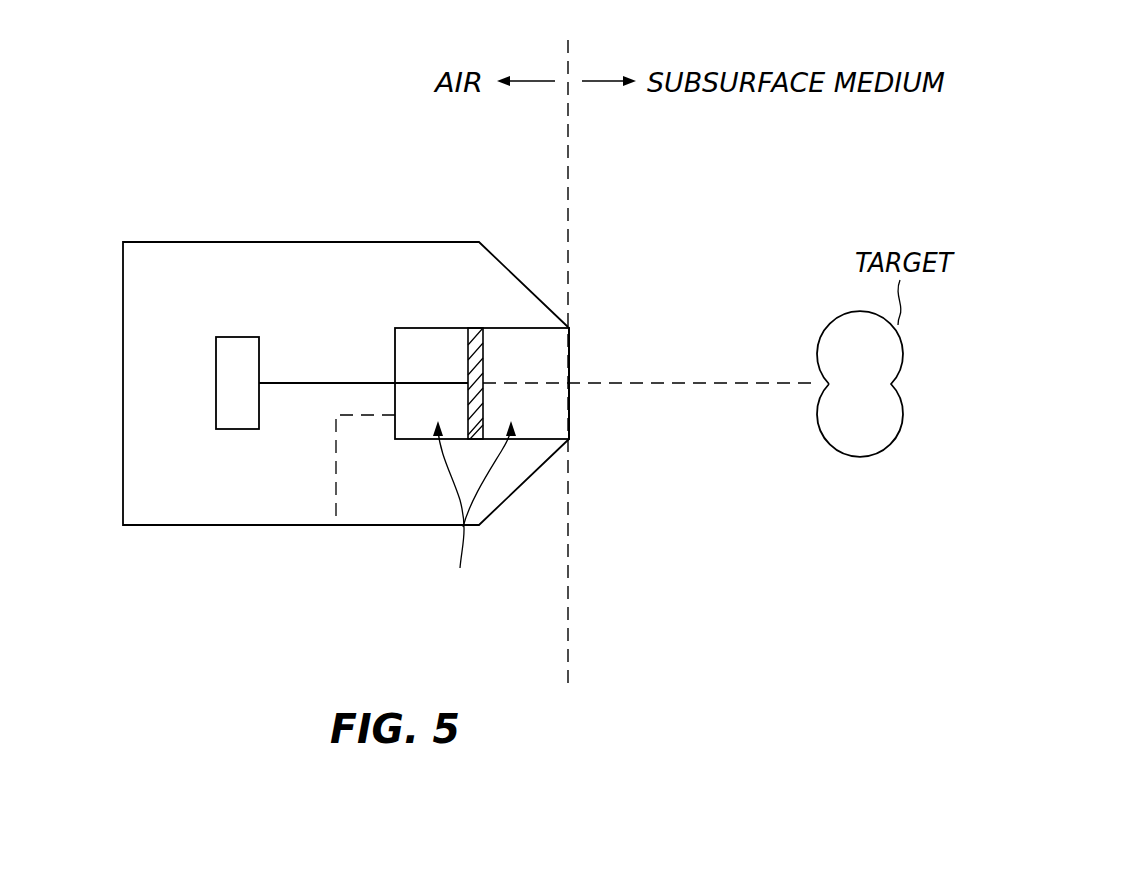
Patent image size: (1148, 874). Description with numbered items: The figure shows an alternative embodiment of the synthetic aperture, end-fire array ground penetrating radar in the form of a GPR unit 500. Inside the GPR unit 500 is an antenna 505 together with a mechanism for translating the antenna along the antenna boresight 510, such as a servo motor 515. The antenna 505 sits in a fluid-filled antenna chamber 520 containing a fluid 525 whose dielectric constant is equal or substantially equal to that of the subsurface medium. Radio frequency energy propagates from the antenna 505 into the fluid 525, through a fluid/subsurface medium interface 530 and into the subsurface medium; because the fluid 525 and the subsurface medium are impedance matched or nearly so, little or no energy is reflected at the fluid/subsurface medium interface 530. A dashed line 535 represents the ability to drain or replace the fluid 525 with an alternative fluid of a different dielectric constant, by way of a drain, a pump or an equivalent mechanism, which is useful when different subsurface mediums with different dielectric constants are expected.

The GPR unit 500 is at (202, 242).
The antenna 505 is at (473, 328).
The antenna boresight 510 is at (662, 383).
The servo motor 515 is at (228, 430).
The fluid-filled antenna chamber 520 is at (395, 328).
The fluid 525 is at (467, 518).
The fluid/subsurface medium interface 530 is at (571, 412).
The dashed line 535 is at (330, 490).